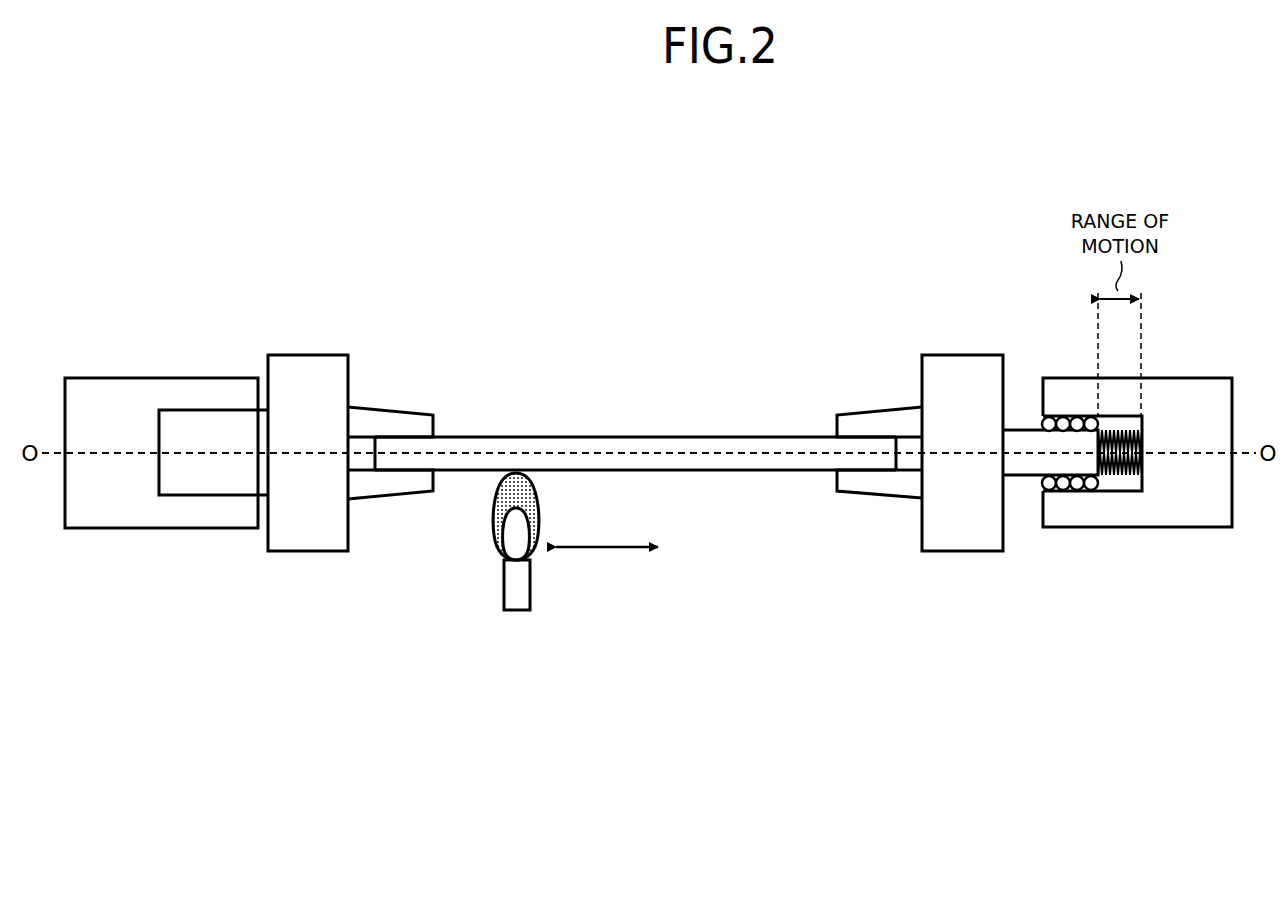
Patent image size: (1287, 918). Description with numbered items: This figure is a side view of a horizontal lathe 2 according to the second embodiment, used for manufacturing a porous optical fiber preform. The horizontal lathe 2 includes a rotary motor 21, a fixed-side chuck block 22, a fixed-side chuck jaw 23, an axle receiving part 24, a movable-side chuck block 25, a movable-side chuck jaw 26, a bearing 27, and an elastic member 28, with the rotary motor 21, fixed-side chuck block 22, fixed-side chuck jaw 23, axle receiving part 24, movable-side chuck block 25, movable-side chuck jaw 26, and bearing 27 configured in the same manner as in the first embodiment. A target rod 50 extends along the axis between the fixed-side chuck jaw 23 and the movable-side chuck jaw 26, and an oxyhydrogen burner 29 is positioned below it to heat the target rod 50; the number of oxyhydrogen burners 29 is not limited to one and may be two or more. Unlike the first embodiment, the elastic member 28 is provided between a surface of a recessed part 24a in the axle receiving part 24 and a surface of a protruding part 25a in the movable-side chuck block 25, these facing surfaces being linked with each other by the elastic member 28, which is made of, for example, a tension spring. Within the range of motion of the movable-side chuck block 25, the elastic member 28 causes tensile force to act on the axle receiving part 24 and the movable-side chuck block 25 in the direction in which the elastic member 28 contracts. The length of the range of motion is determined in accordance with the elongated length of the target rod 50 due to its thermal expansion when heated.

The horizontal lathe 2 is at (645, 310).
The rotary motor 21 is at (110, 393).
The fixed-side chuck block 22 is at (306, 368).
The fixed-side chuck jaw 23 is at (380, 425).
The target rod 50 is at (684, 434).
The oxyhydrogen burner 29 is at (516, 611).
The movable-side chuck jaw 26 is at (890, 426).
The movable-side chuck block 25 is at (962, 370).
The protruding part 25a is at (1020, 465).
The axle receiving part 24 is at (1215, 404).
The recessed part 24a is at (1040, 429).
The bearing 27 is at (1080, 420).
The elastic member 28 is at (1128, 480).